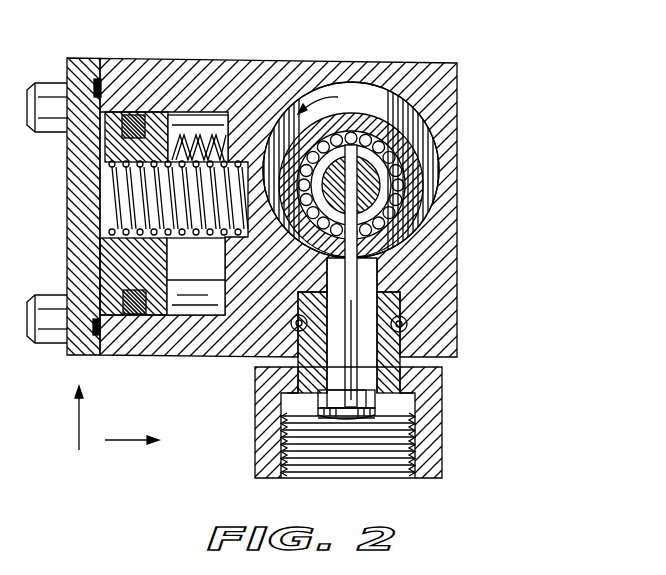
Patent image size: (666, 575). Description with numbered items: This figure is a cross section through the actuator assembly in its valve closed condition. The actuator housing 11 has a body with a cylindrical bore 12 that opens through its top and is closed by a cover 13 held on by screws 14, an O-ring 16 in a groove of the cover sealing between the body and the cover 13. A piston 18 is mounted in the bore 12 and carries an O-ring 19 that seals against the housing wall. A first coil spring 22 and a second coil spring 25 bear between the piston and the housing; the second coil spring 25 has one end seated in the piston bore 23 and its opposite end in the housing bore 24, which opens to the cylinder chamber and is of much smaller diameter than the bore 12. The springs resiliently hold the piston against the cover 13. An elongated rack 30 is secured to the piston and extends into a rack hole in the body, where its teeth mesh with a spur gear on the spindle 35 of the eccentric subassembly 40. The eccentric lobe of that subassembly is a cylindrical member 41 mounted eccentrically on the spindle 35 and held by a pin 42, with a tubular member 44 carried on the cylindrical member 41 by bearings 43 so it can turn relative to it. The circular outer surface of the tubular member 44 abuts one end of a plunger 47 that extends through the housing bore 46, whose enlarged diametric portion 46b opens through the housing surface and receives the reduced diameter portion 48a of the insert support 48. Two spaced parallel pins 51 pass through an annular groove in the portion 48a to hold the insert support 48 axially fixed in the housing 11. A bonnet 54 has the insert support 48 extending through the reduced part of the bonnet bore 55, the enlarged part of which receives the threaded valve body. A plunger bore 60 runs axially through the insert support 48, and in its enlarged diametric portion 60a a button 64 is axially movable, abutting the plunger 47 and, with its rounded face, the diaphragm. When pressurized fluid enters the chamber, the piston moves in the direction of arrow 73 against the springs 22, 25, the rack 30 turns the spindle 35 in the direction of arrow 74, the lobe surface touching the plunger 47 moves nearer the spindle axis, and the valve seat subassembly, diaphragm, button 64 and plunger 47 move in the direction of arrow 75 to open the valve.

The actuator housing 11 is at (262, 77).
The cylindrical bore 12 is at (176, 112).
The cover 13 is at (86, 62).
The screws 14 is at (46, 98).
The O-ring 16 is at (100, 128).
The piston 18 is at (115, 270).
The O-ring 19 is at (128, 112).
The first coil spring 22 is at (213, 124).
The piston bore 23 is at (115, 238).
The housing bore 24 is at (235, 243).
The second coil spring 25 is at (130, 185).
The rack 30 is at (195, 299).
The spindle 35 is at (380, 137).
The eccentric subassembly 40 is at (427, 122).
The cylindrical member 41 is at (400, 190).
The pin 42 is at (415, 142).
The bearings 43 is at (413, 138).
The tubular member 44 is at (405, 226).
The housing bore 46 is at (420, 362).
The enlarged diametric portion 46b is at (305, 325).
The plunger 47 is at (405, 320).
The insert support 48 is at (385, 368).
The reduced diameter portion 48a is at (312, 375).
The pins 51 is at (365, 317).
The bonnet 54 is at (253, 448).
The bonnet bore 55 is at (298, 440).
The plunger bore 60 is at (408, 394).
The enlarged diametric portion 60a is at (405, 400).
The button 64 is at (350, 420).
The arrow 73 is at (123, 440).
The arrow 74 is at (318, 106).
The arrow 75 is at (79, 432).